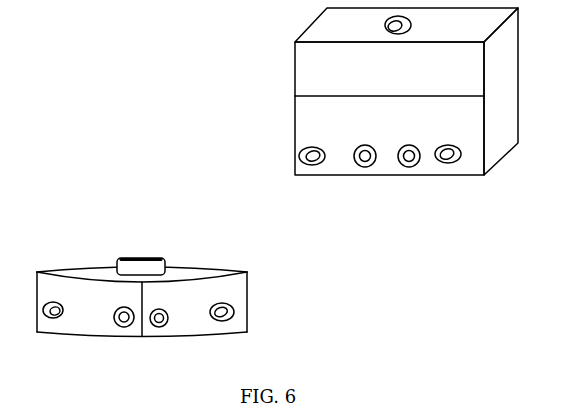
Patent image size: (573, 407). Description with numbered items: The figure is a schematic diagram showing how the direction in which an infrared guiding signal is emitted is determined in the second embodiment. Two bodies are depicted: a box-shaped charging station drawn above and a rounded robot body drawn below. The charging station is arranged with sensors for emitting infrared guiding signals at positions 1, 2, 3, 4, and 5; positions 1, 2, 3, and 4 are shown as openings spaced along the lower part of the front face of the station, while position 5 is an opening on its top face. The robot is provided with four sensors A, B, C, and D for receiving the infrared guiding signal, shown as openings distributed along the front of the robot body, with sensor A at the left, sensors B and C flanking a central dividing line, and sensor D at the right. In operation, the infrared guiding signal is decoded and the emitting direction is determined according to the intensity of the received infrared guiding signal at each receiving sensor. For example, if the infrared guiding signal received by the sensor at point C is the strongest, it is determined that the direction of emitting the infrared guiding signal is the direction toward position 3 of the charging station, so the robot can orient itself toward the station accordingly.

The position 1 is at (312, 172).
The position 2 is at (365, 171).
The position 3 is at (409, 171).
The position 4 is at (448, 172).
The position 5 is at (409, 25).
The sensor A is at (41, 306).
The sensor B is at (124, 336).
The sensor C is at (160, 337).
The sensor D is at (222, 333).